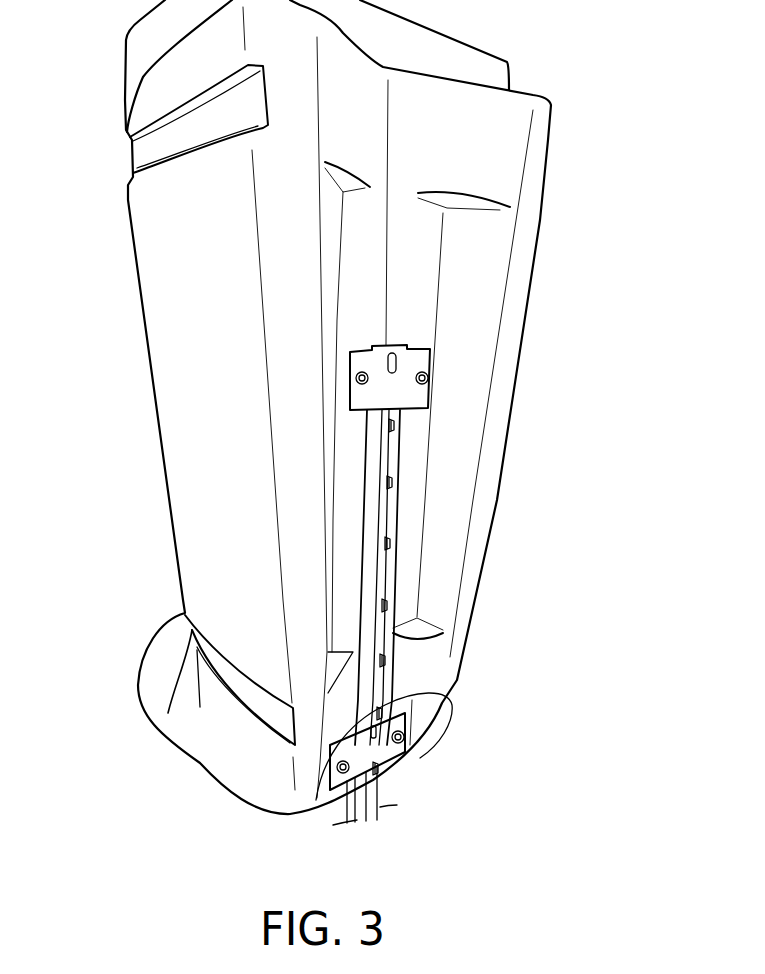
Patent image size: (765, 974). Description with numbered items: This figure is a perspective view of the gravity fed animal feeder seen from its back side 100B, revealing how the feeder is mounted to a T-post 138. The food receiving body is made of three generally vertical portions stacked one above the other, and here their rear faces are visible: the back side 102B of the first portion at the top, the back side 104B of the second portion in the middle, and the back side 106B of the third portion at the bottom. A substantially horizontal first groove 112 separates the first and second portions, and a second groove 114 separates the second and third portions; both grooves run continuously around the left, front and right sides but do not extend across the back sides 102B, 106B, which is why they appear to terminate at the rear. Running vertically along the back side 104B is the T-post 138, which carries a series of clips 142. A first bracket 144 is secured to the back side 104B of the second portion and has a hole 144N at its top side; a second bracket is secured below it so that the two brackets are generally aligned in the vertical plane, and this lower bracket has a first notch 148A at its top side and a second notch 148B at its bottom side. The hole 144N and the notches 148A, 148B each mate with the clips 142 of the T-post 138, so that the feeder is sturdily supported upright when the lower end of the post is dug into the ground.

The back side of the feeder 100B is at (567, 307).
The back side of the first portion 102B is at (545, 127).
The back side of the second portion 104B is at (522, 240).
The back side of the third portion 106B is at (447, 716).
The first groove 112 is at (147, 147).
The second groove 114 is at (260, 708).
The T-post 138 is at (387, 573).
The clips 142 is at (390, 487).
The first bracket 144 is at (420, 400).
The hole 144N is at (390, 348).
The first notch 148A is at (408, 712).
The second notch 148B is at (370, 748).